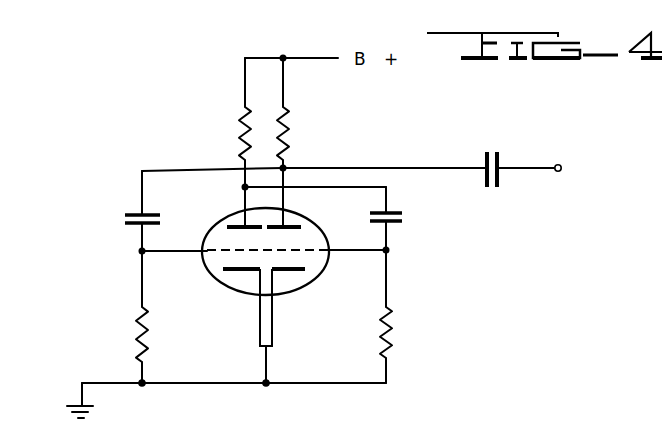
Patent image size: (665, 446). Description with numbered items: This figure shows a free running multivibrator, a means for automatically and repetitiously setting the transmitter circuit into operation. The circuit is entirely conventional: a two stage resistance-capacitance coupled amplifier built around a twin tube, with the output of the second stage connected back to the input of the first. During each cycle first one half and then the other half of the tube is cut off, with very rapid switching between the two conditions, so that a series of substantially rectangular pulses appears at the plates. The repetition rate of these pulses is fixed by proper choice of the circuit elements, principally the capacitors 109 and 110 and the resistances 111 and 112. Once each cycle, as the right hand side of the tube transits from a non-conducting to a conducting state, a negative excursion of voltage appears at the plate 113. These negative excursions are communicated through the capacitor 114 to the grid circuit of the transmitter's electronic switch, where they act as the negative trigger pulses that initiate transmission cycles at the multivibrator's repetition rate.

The capacitor 109 is at (127, 219).
The capacitor 110 is at (398, 222).
The resistance 111 is at (138, 340).
The resistance 112 is at (393, 343).
The plate 113 is at (285, 225).
The capacitor 114 is at (490, 150).